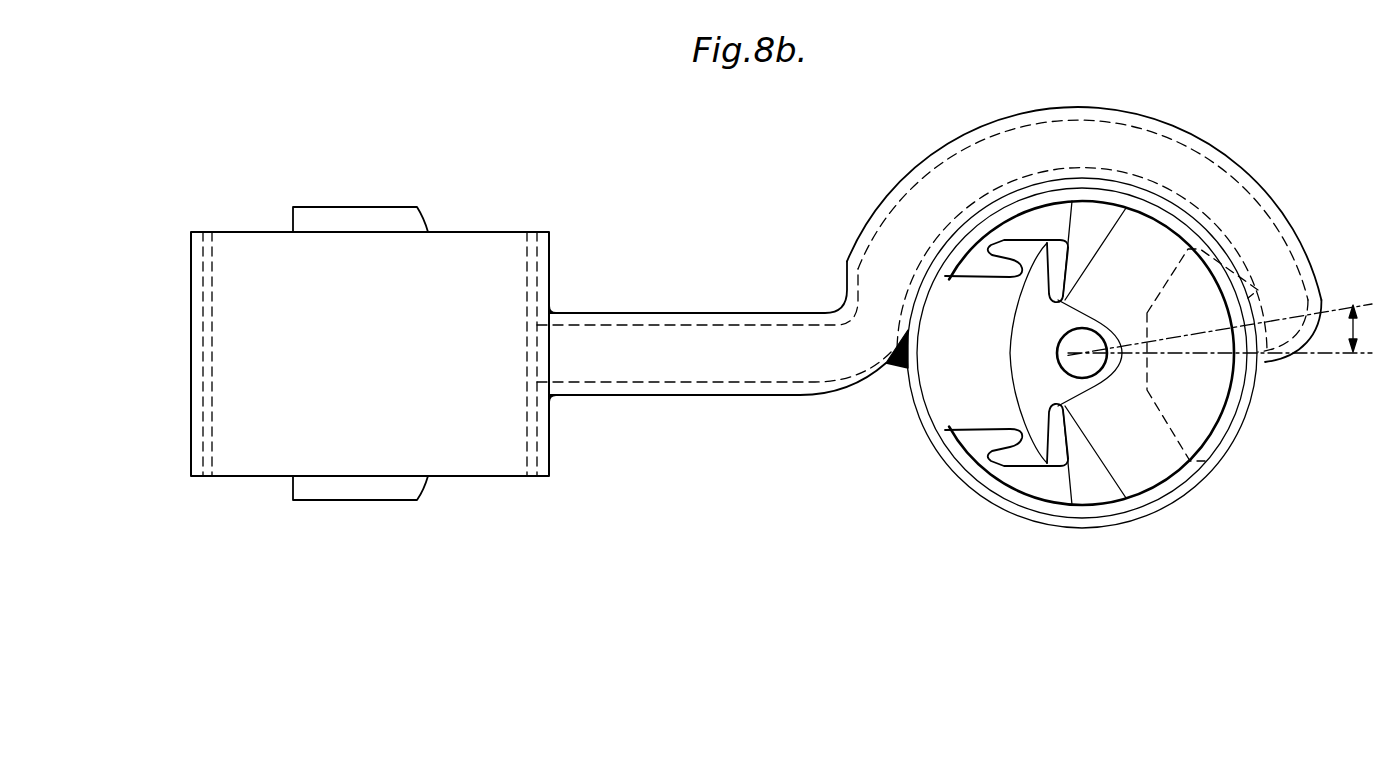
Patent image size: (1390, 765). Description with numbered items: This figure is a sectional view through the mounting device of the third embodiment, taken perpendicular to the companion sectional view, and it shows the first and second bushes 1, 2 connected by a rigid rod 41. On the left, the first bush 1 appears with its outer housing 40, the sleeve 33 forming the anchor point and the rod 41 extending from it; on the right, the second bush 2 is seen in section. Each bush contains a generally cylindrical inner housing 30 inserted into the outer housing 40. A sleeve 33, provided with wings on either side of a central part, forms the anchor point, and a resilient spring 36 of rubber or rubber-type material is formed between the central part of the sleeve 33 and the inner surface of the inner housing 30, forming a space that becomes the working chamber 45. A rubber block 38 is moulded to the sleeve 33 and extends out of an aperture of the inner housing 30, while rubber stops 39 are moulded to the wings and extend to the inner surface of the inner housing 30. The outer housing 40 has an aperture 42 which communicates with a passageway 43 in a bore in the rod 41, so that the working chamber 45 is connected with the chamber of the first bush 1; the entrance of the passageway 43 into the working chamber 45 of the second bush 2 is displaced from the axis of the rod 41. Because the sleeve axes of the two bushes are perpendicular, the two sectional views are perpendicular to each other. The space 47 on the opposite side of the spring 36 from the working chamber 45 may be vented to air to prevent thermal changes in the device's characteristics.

The first bush 1 is at (373, 122).
The second bush 2 is at (1065, 66).
The inner housing 30 is at (1040, 500).
The sleeve 33 is at (337, 215).
The resilient spring 36 is at (1150, 470).
The rubber block 38 is at (947, 397).
The rubber stops 39 is at (1003, 247).
The outer housing 40 is at (448, 458).
The rigid rod 41 is at (720, 377).
The aperture 42 is at (1268, 340).
The passageway 43 is at (723, 333).
The working chamber 45 is at (1206, 381).
The space 47 is at (1075, 212).